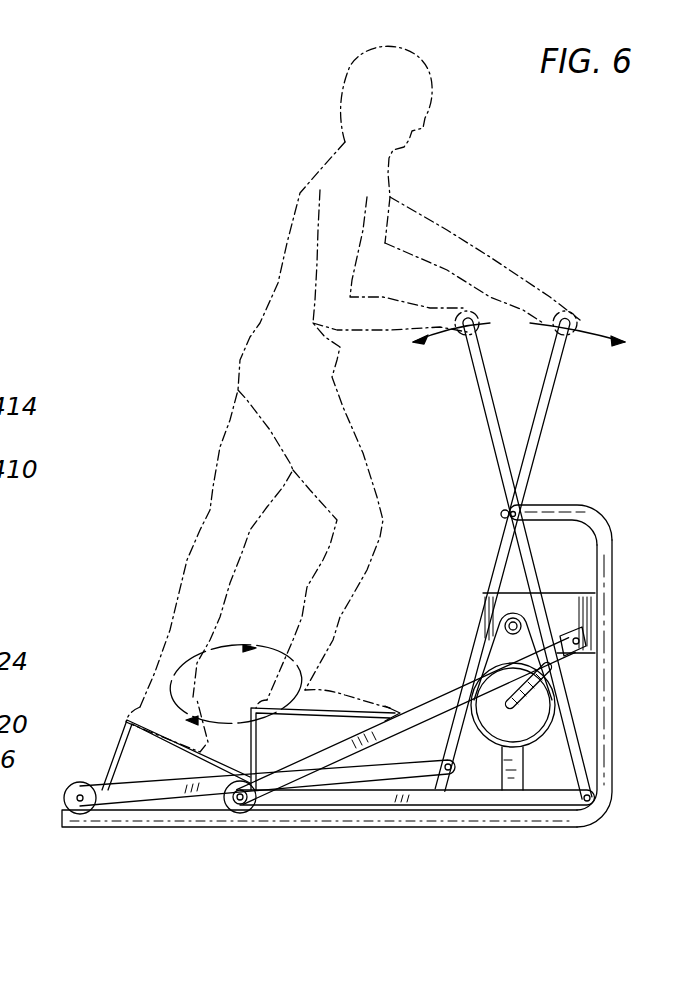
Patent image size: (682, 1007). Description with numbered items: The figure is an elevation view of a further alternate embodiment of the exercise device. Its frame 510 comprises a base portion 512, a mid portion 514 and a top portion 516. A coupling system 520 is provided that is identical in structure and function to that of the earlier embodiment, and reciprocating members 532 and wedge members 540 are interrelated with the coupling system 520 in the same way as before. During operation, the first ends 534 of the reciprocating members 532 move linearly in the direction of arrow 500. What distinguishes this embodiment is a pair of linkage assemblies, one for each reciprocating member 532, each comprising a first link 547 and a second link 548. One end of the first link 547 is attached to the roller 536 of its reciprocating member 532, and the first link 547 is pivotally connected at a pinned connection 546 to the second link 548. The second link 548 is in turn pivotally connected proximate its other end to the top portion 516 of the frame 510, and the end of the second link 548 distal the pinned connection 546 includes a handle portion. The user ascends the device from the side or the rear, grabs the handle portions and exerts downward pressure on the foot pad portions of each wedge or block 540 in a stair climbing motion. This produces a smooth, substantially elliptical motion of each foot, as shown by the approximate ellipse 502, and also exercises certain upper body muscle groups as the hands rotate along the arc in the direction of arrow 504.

The arrow 500 is at (57, 798).
The approximate ellipse 502 is at (197, 665).
The arrow 504 is at (597, 336).
The frame 510 is at (577, 641).
The base portion 512 is at (360, 828).
The mid portion 514 is at (613, 647).
The top portion 516 is at (567, 506).
The coupling system 520 is at (550, 737).
The reciprocating member 532 is at (437, 703).
The first end 534 is at (100, 806).
The roller 536 is at (78, 783).
The wedge member 540 is at (126, 752).
The pinned connection 546 is at (586, 828).
The first link 547 is at (463, 805).
The second link 548 is at (487, 424).